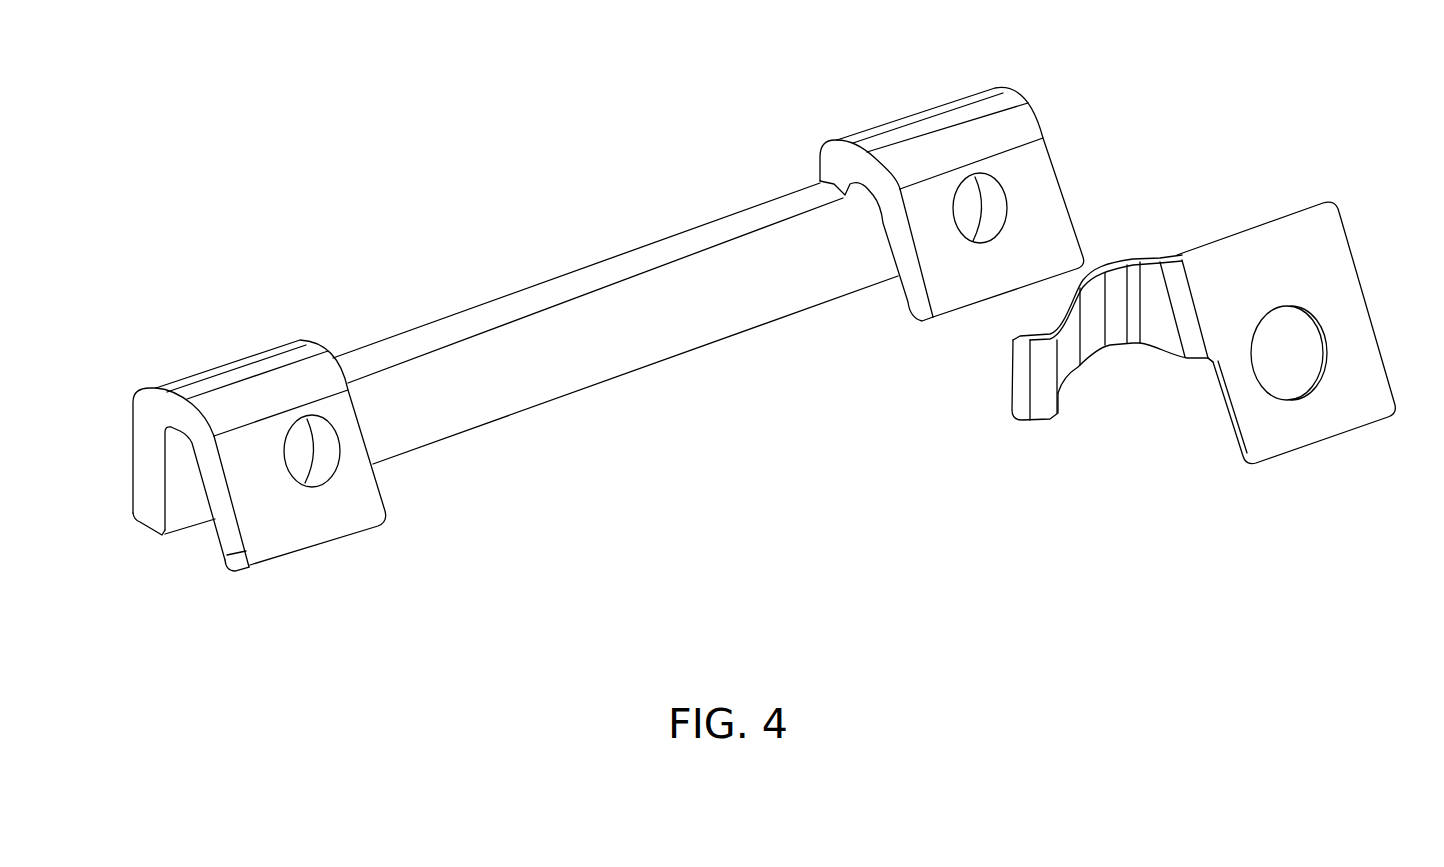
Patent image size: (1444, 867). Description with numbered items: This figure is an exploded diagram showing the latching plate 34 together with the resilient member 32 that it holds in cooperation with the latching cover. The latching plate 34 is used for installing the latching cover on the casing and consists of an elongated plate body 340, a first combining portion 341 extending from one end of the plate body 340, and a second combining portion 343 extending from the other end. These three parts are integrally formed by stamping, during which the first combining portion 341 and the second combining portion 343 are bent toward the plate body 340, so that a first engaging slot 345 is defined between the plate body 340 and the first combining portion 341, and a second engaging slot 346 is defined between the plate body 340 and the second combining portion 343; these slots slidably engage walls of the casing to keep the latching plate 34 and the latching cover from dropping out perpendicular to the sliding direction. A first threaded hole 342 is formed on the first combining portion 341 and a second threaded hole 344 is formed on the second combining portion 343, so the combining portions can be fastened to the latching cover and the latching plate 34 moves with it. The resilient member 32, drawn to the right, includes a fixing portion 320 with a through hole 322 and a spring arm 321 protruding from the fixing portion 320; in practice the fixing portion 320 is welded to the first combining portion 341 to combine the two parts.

The resilient member 32 is at (1365, 206).
The fixing portion 320 is at (1357, 355).
The spring arm 321 is at (1097, 343).
The through hole 322 is at (1268, 313).
The latching plate 34 is at (1046, 54).
The plate body 340 is at (630, 345).
The first combining portion 341 is at (1043, 178).
The first threaded hole 342 is at (950, 192).
The second combining portion 343 is at (327, 513).
The second threaded hole 344 is at (278, 422).
The first engaging slot 345 is at (882, 223).
The second engaging slot 346 is at (203, 498).